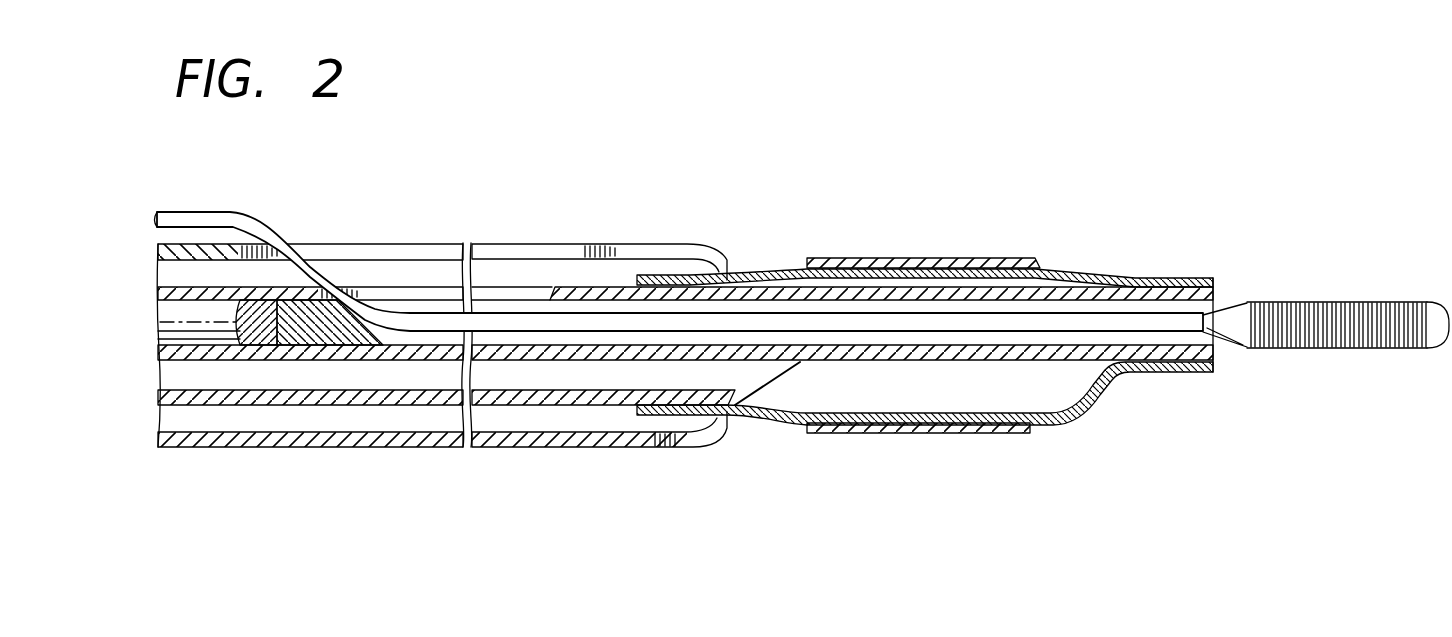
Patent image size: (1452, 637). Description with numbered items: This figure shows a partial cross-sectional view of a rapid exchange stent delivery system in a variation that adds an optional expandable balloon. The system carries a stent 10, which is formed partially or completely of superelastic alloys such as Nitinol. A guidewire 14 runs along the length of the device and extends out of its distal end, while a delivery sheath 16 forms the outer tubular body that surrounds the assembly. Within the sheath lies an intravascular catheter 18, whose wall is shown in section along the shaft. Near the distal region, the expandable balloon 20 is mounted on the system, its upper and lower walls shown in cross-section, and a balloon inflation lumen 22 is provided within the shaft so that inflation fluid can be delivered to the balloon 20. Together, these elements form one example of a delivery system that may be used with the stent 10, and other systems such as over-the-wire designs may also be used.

The stent 10 is at (918, 262).
The guidewire 14 is at (192, 210).
The delivery sheath 16 is at (317, 448).
The intravascular catheter 18 is at (893, 362).
The expandable balloon 20 is at (1063, 423).
The balloon inflation lumen 22 is at (203, 390).